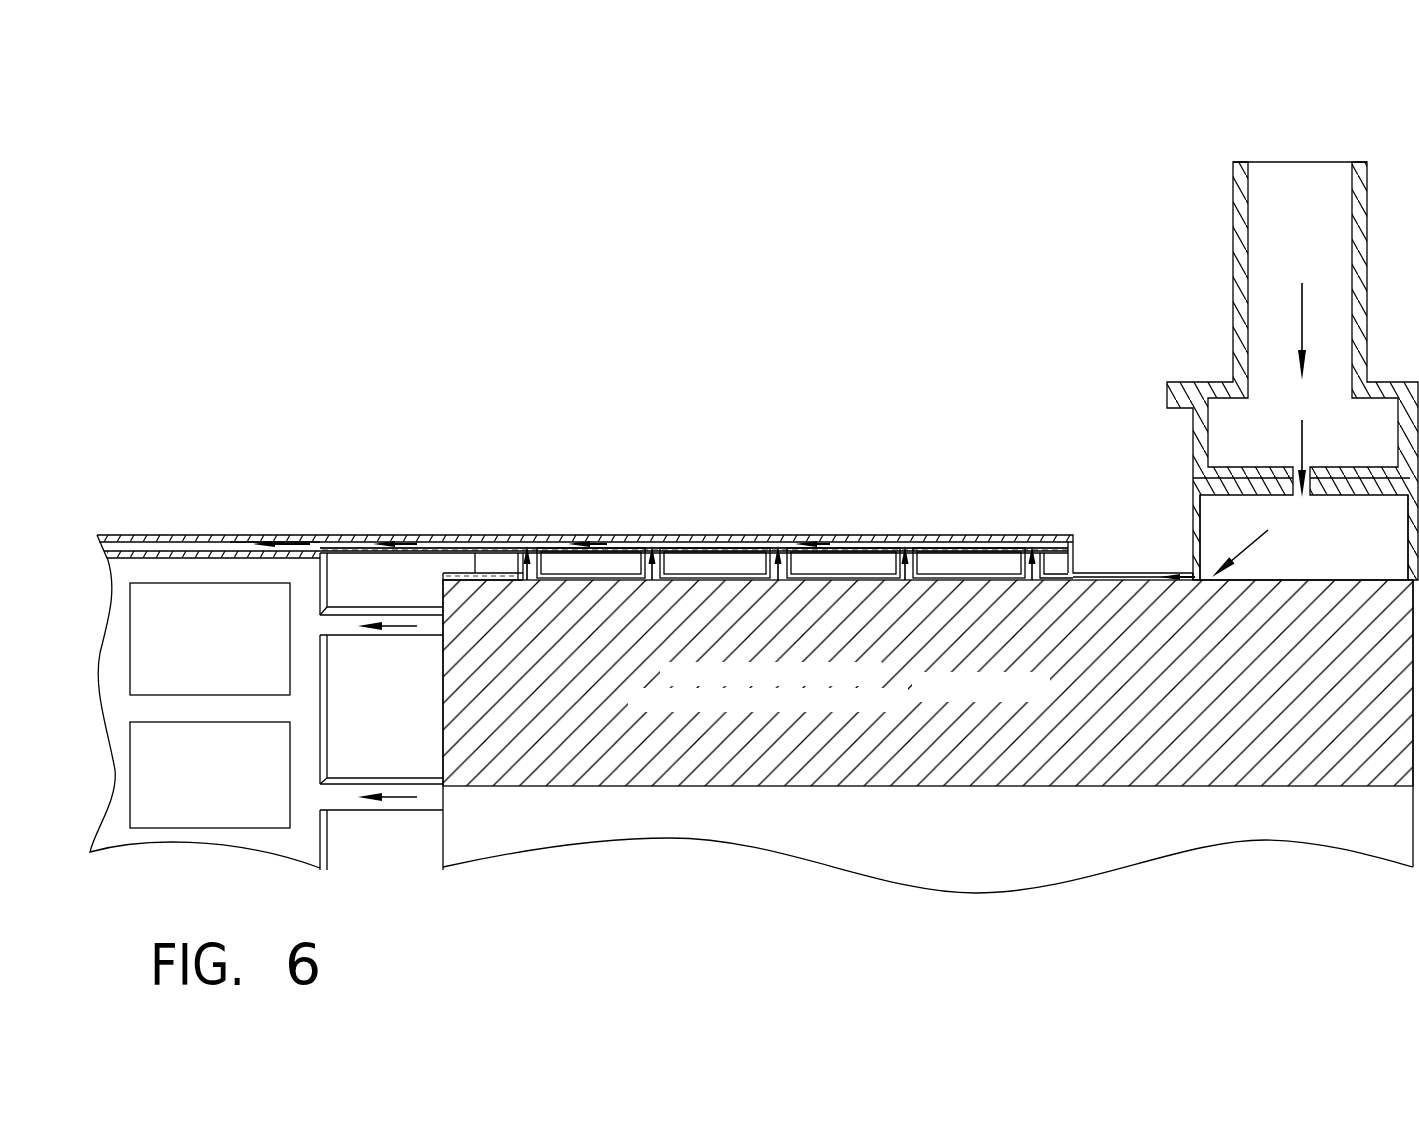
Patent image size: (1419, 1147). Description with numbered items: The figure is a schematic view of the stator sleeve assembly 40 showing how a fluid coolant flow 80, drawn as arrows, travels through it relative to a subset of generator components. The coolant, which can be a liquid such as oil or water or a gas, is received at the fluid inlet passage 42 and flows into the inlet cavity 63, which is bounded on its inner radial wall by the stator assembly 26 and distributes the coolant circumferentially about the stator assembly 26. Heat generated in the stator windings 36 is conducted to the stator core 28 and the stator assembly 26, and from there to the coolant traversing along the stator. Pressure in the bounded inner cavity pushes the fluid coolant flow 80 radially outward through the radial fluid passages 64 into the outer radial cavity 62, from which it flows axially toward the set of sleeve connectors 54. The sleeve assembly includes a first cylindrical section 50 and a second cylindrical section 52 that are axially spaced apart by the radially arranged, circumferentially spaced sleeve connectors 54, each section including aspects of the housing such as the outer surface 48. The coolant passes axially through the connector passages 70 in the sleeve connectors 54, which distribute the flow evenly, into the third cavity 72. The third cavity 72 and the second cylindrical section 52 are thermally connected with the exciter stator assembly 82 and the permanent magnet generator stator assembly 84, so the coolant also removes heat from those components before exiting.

The stator assembly 26 is at (953, 699).
The stator core 28 is at (996, 699).
The stator windings 36 is at (1041, 699).
The stator sleeve assembly 40 is at (470, 317).
The fluid inlet passage 42 is at (1312, 138).
The outer surface 48 is at (317, 500).
The first cylindrical section 50 is at (795, 462).
The second cylindrical section 52 is at (294, 482).
The sleeve connectors 54 is at (350, 496).
The outer radial cavity 62 is at (543, 546).
The inlet cavity 63 is at (1335, 554).
The radial fluid passages 64 is at (779, 545).
The connector passages 70 is at (430, 543).
The third cavity 72 is at (165, 547).
The fluid coolant flow 80 is at (1300, 305).
The exciter stator assembly 82 is at (187, 688).
The permanent magnet generator (PMG) stator assembly 84 is at (187, 830).